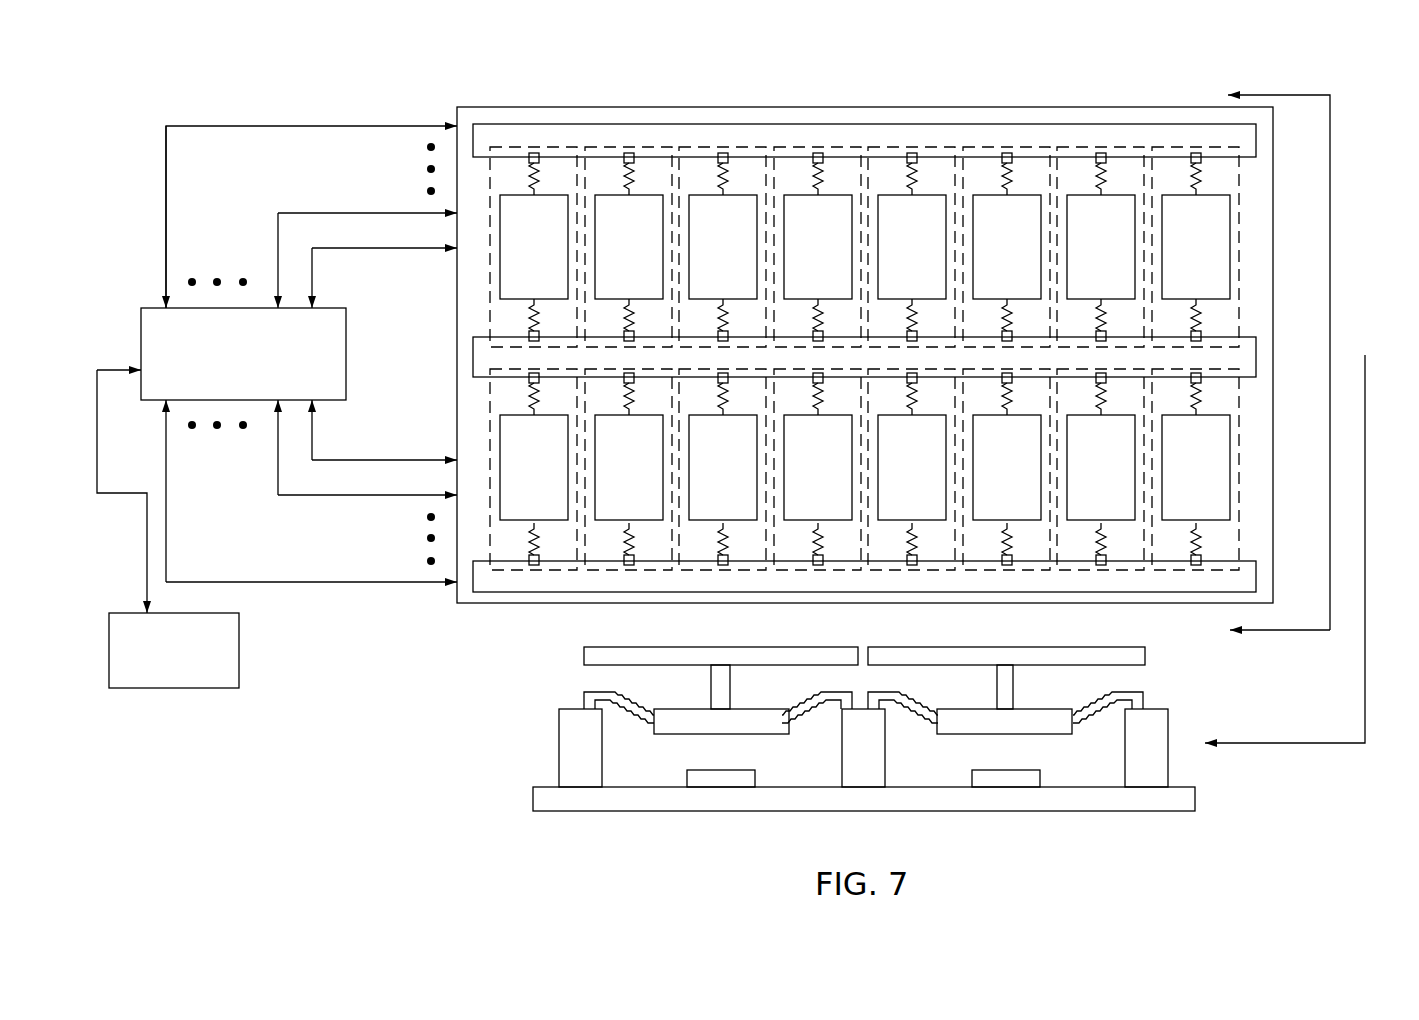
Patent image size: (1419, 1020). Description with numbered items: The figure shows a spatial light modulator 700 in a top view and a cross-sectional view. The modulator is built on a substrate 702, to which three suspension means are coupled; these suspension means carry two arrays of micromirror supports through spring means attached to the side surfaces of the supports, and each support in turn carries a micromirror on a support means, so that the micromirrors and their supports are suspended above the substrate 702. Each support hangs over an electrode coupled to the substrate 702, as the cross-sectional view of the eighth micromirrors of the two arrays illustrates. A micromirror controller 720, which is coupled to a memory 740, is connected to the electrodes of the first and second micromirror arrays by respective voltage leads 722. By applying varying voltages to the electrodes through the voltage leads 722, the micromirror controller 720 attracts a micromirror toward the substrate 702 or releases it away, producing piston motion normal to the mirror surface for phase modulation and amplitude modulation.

The spatial light modulator 700 is at (332, 790).
The substrate 702 is at (1195, 797).
The micromirror controller 720 is at (261, 391).
The voltage lead 722 is at (361, 628).
The memory 740 is at (158, 677).